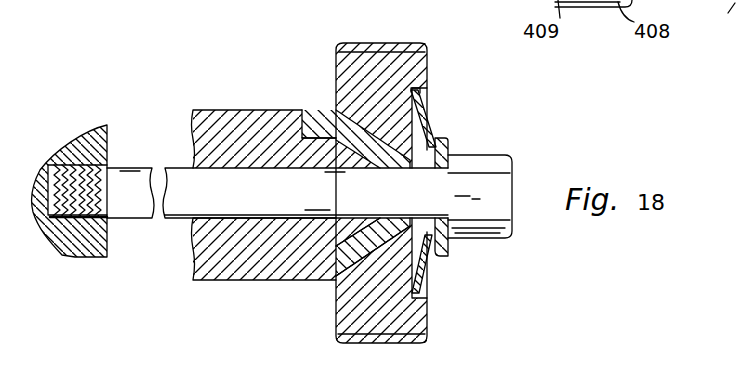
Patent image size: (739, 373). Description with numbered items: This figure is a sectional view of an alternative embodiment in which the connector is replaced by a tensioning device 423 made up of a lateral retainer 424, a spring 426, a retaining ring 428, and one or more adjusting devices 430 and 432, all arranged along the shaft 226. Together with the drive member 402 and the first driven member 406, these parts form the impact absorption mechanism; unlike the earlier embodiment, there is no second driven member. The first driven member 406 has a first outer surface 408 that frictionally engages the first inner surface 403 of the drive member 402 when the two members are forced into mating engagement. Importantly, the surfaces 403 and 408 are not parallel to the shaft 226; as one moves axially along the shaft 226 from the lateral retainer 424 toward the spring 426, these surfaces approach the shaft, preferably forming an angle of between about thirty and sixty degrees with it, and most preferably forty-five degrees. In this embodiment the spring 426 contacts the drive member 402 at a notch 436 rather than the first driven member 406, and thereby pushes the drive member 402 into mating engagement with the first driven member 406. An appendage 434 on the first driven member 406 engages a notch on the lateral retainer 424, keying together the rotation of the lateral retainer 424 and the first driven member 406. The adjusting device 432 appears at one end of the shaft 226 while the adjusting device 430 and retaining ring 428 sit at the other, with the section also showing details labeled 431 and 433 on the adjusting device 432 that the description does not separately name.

The drive member 402 is at (383, 52).
The lateral retainer 424 is at (204, 248).
The appendage 434 is at (318, 110).
The first driven member 406 is at (377, 158).
The first inner surface 403 is at (362, 276).
The first outer surface 408 is at (365, 292).
The shaft 226 is at (262, 203).
The adjusting device 432 is at (91, 121).
The nut wall 431 is at (97, 143).
The threaded bore 433 is at (95, 216).
The notch 436 is at (421, 96).
The spring 426 is at (428, 120).
The retaining ring 428 is at (450, 143).
The adjusting device 430 is at (497, 178).
The tensioning device 423 is at (468, 248).